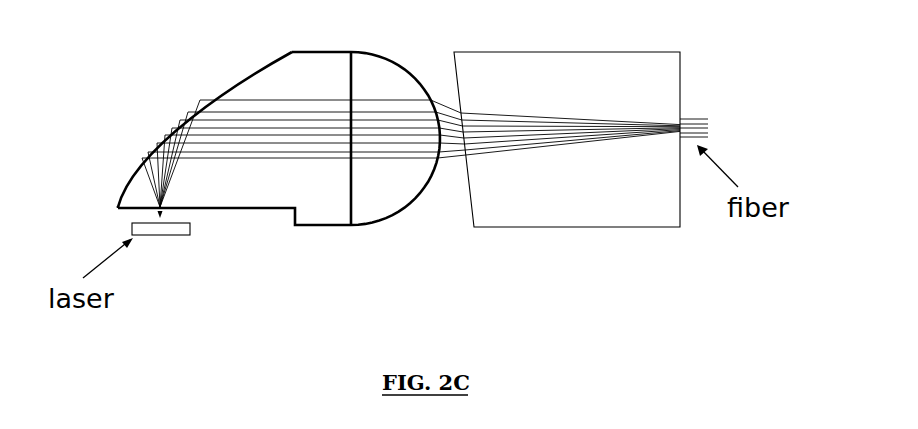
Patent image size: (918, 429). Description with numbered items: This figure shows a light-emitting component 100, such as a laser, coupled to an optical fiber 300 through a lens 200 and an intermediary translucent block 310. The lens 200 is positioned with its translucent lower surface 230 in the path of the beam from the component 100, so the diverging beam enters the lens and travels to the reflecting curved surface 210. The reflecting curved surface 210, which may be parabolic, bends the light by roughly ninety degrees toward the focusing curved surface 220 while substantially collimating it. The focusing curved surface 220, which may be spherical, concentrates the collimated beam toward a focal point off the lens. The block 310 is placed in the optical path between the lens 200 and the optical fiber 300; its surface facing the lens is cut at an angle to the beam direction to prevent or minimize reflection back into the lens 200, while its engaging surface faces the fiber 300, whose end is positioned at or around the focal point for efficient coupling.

The component 100 is at (194, 243).
The lens 200 is at (286, 127).
The reflecting curved surface 210 is at (205, 129).
The focusing curved surface 220 is at (402, 124).
The lower surface 230 is at (234, 230).
The optical fiber 300 is at (737, 118).
The block 310 is at (578, 125).